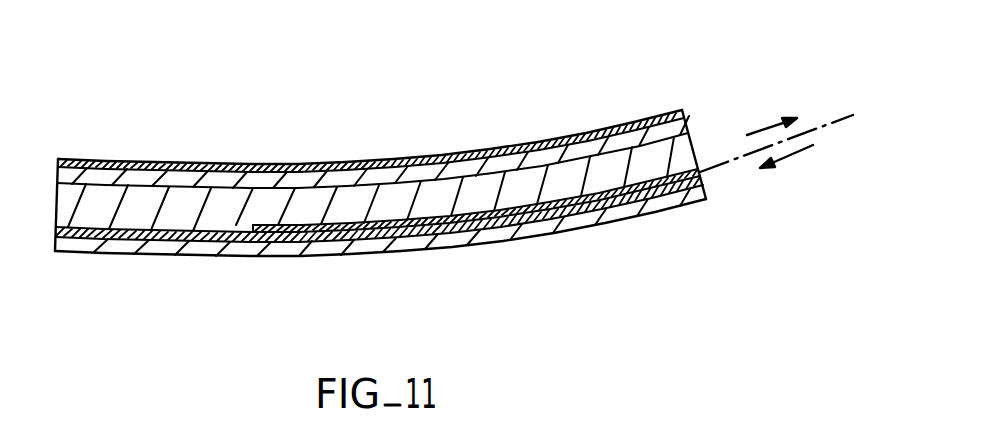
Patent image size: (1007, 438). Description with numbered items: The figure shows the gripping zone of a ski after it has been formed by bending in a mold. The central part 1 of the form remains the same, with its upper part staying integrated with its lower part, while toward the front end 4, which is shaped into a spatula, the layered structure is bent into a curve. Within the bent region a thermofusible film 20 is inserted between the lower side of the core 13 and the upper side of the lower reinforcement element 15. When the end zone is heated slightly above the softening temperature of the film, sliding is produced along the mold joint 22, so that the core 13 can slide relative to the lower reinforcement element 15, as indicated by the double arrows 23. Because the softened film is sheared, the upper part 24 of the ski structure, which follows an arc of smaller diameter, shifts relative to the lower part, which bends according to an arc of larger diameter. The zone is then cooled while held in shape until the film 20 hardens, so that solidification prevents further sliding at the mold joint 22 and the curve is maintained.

The central part 1 is at (160, 140).
The front end 4 is at (546, 114).
The core 13 is at (448, 198).
The lower reinforcement element 15 is at (607, 207).
The thermofusible film 20 is at (522, 238).
The mold joint 22 is at (817, 126).
The double arrows 23 is at (765, 125).
The upper part 24 is at (685, 143).